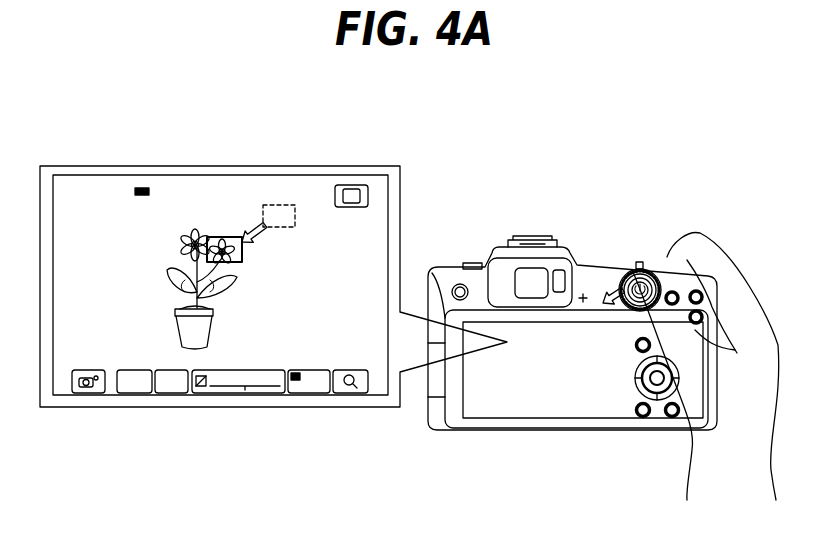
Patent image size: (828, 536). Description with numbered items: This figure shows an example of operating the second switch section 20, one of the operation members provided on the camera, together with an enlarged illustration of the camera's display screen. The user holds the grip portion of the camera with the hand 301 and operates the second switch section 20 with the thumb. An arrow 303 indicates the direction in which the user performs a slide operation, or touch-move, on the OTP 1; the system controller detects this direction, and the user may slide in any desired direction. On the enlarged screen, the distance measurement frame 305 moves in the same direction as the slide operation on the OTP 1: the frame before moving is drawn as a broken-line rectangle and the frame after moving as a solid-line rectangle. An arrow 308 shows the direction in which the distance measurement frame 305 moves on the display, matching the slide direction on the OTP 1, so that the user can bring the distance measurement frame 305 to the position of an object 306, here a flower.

The OTP 1 is at (648, 270).
The second switch section 20 is at (636, 262).
The hand 301 is at (725, 267).
The arrow 303 is at (611, 288).
The distance measurement frame 305 is at (283, 205).
The object 306 is at (228, 237).
The arrow 308 is at (252, 224).